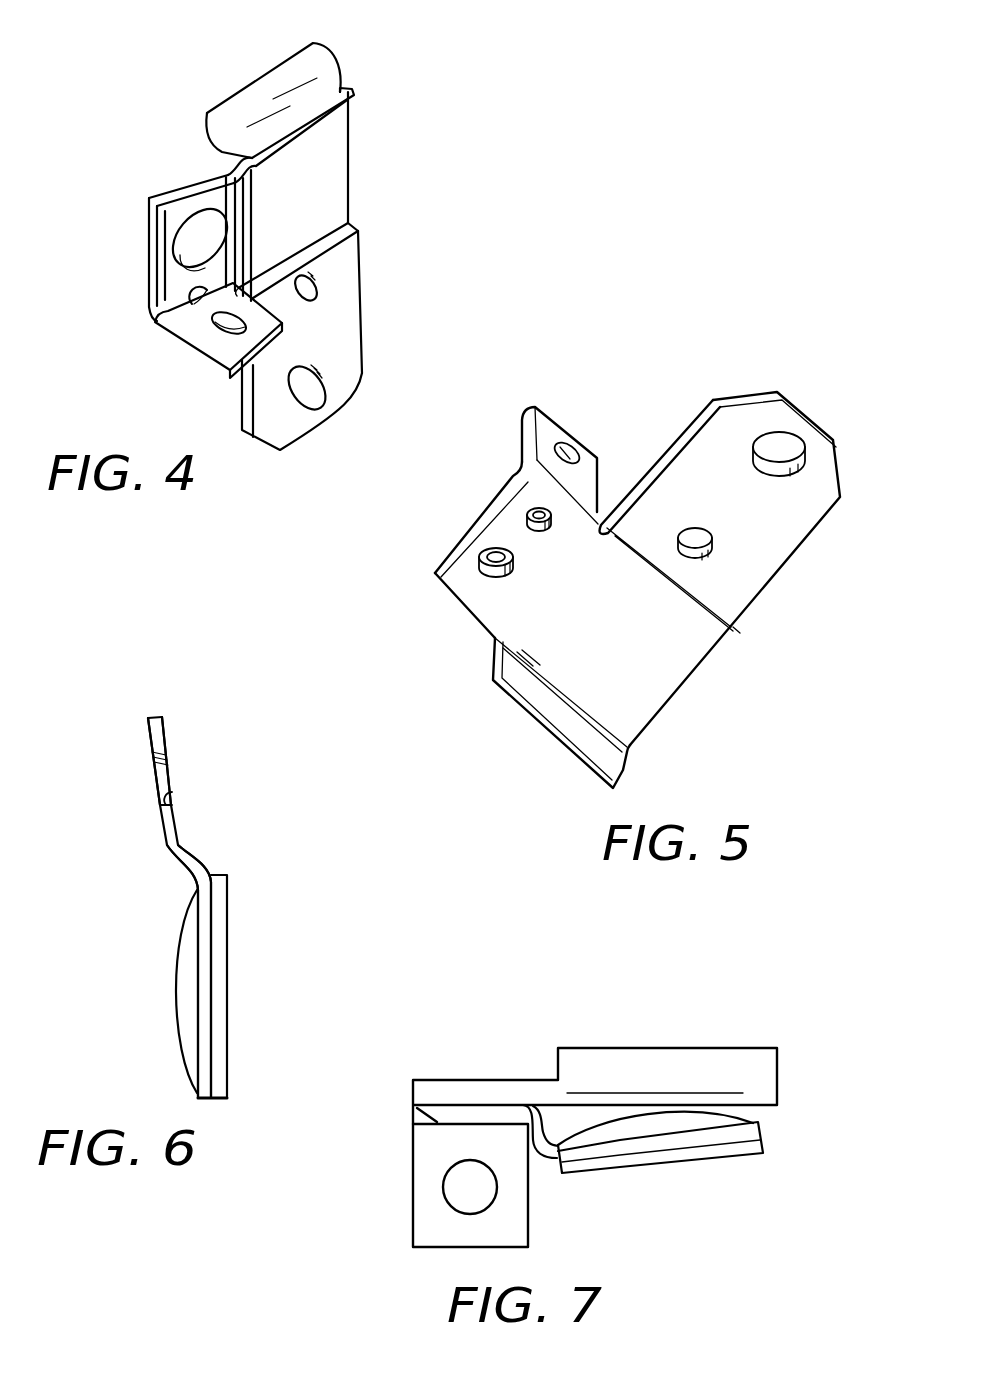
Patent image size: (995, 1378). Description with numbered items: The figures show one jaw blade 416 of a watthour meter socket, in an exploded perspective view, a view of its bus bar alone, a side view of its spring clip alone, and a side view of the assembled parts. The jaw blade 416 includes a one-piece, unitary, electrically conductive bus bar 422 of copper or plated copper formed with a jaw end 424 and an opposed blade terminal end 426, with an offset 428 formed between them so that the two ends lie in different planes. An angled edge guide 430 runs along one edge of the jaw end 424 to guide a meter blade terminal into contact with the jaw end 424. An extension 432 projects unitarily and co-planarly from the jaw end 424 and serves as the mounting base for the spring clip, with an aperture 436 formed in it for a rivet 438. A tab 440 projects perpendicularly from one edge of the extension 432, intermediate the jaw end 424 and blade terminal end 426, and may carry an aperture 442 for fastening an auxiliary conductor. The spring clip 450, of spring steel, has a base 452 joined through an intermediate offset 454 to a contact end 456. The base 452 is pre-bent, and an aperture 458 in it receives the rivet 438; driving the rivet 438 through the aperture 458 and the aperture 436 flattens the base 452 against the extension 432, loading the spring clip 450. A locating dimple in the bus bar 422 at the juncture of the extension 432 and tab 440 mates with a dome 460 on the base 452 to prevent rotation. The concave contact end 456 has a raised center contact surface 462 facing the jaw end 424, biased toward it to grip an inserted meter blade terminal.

In FIG. 4, the jaw blade 416 is at (151, 58).
In FIG. 4, the bus bar 422 is at (362, 218).
In FIG. 5, the bus bar 422 is at (742, 629).
In FIG. 5, the jaw end 424 is at (640, 727).
In FIG. 7, the jaw end 424 is at (767, 1107).
In FIG. 4, the blade terminal end 426 is at (347, 313).
In FIG. 5, the blade terminal end 426 is at (737, 417).
In FIG. 4, the offset 428 is at (333, 243).
In FIG. 5, the offset 428 is at (703, 607).
In FIG. 5, the angled edge guide 430 is at (513, 670).
In FIG. 4, the extension 432 is at (198, 155).
In FIG. 5, the extension 432 is at (457, 580).
In FIG. 5, the aperture 436 is at (480, 547).
In FIG. 4, the rivet 438 is at (200, 222).
In FIG. 4, the tab 440 is at (175, 337).
In FIG. 5, the tab 440 is at (543, 420).
In FIG. 7, the tab 440 is at (420, 1207).
In FIG. 4, the aperture 442 is at (218, 322).
In FIG. 4, the spring clip 450 is at (342, 135).
In FIG. 6, the spring clip 450 is at (155, 898).
In FIG. 7, the spring clip 450 is at (648, 1169).
In FIG. 6, the base 452 is at (160, 743).
In FIG. 6, the offset 454 is at (195, 843).
In FIG. 6, the contact end 456 is at (203, 927).
In FIG. 5, the aperture 458 is at (527, 508).
In FIG. 6, the aperture 458 is at (170, 797).
In FIG. 4, the dome 460 is at (200, 293).
In FIG. 6, the raised center contact surface 462 is at (178, 998).
In FIG. 7, the raised center contact surface 462 is at (618, 1117).